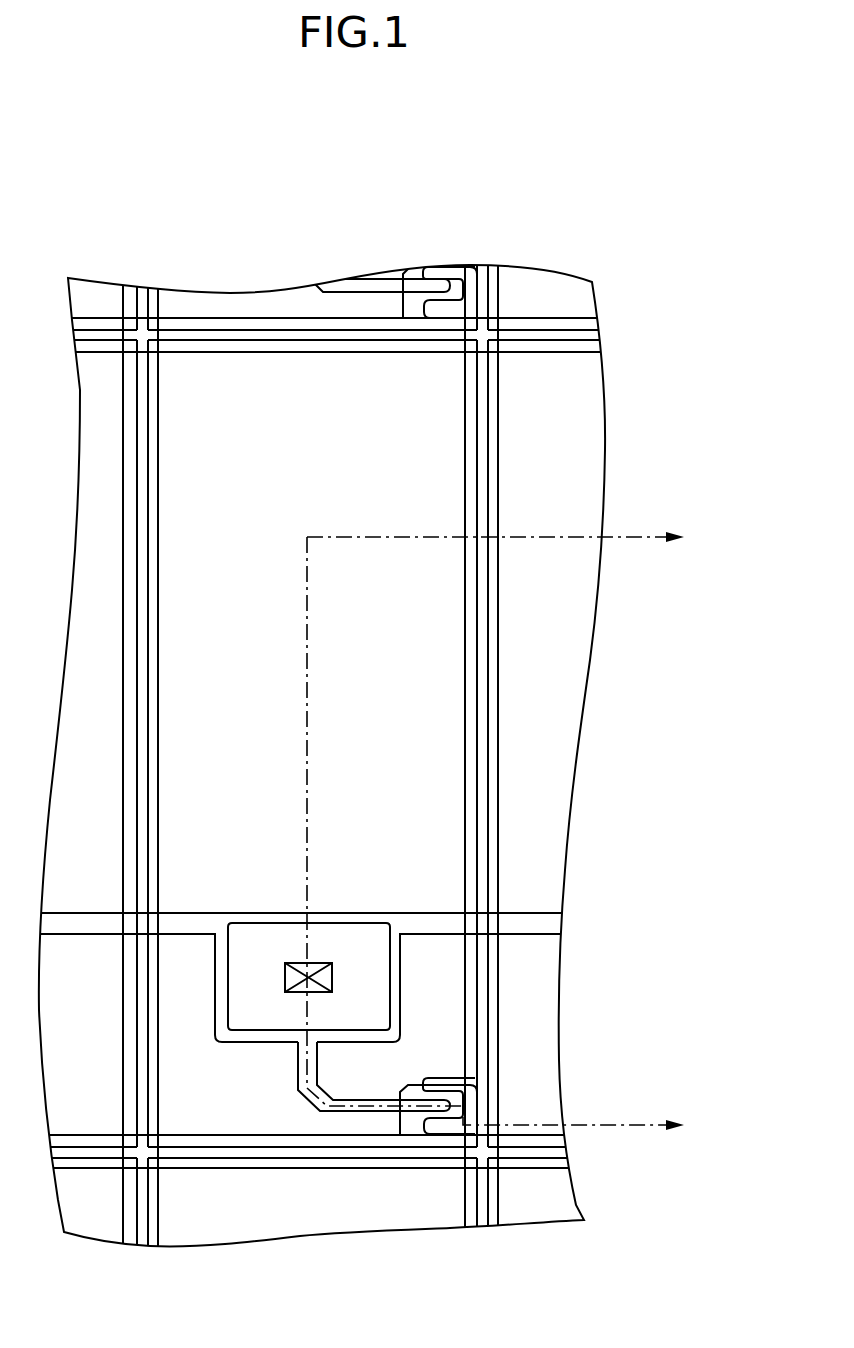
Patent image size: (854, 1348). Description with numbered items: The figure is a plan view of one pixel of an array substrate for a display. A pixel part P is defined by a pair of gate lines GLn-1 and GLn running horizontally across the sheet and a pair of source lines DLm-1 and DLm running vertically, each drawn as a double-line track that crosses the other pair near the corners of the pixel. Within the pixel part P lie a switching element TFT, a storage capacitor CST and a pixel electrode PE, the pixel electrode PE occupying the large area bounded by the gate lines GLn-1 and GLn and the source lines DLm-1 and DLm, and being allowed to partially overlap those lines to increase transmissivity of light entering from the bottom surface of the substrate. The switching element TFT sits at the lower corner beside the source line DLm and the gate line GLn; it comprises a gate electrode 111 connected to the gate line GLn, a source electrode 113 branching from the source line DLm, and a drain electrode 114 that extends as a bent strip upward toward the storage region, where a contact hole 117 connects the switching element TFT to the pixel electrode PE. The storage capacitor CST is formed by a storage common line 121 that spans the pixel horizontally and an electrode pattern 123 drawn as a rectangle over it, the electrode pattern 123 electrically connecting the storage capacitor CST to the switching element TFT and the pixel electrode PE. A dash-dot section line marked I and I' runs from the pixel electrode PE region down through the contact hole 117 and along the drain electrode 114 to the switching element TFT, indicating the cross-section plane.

The pixel part P is at (336, 462).
The pixel electrode PE is at (431, 447).
The gate line GLn-1 is at (587, 335).
The n-th gate line GLn is at (568, 1153).
The source line DLm-1 is at (140, 1236).
The m-th source line DLm is at (483, 1214).
The storage capacitor CST is at (373, 974).
The storage common line 121 is at (550, 925).
The electrode pattern 123 is at (375, 952).
The contact hole 117 is at (296, 962).
The switching element TFT is at (381, 790).
The gate electrode 111 is at (410, 1127).
The source electrode 113 is at (440, 1132).
The drain electrode 114 is at (342, 1108).
The section line I is at (499, 839).
The section line I' is at (510, 535).